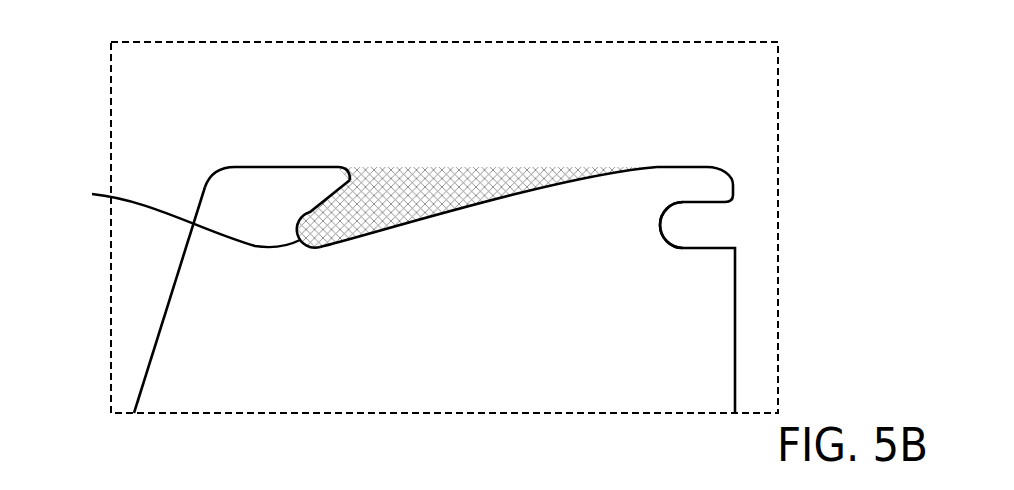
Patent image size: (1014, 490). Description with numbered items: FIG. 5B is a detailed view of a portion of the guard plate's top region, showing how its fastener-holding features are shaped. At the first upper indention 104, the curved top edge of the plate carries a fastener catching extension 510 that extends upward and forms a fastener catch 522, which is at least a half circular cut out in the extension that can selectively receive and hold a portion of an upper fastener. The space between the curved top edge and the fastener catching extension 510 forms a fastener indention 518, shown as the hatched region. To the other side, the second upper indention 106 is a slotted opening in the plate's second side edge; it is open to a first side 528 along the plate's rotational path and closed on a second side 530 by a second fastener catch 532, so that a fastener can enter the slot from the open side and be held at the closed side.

The first upper indention 104 is at (705, 225).
The second upper indention 106 is at (333, 212).
The fastener catching extension 510 is at (266, 167).
The fastener indention 518 is at (384, 200).
The fastener catch 522 is at (156, 294).
The first side 528 is at (735, 236).
The second side 530 is at (657, 229).
The second fastener catch 532 is at (671, 225).